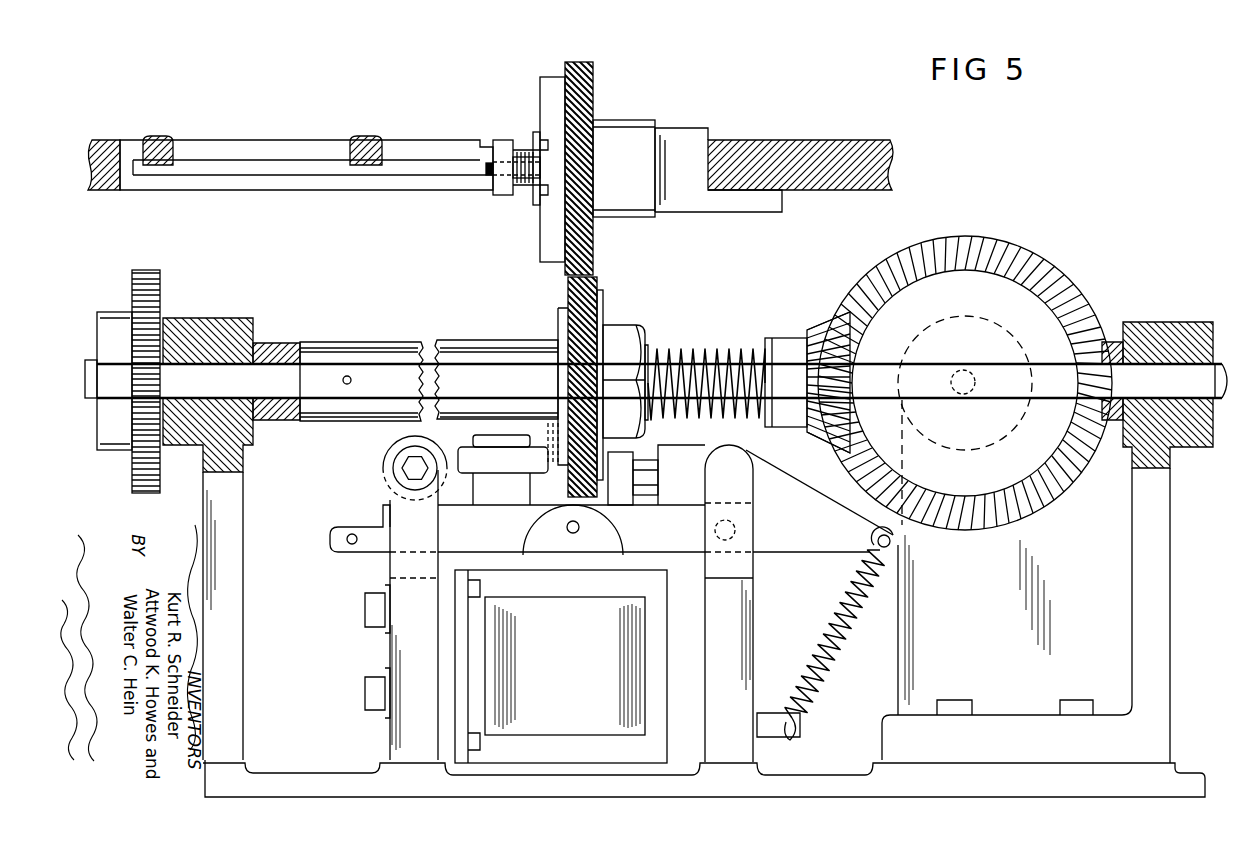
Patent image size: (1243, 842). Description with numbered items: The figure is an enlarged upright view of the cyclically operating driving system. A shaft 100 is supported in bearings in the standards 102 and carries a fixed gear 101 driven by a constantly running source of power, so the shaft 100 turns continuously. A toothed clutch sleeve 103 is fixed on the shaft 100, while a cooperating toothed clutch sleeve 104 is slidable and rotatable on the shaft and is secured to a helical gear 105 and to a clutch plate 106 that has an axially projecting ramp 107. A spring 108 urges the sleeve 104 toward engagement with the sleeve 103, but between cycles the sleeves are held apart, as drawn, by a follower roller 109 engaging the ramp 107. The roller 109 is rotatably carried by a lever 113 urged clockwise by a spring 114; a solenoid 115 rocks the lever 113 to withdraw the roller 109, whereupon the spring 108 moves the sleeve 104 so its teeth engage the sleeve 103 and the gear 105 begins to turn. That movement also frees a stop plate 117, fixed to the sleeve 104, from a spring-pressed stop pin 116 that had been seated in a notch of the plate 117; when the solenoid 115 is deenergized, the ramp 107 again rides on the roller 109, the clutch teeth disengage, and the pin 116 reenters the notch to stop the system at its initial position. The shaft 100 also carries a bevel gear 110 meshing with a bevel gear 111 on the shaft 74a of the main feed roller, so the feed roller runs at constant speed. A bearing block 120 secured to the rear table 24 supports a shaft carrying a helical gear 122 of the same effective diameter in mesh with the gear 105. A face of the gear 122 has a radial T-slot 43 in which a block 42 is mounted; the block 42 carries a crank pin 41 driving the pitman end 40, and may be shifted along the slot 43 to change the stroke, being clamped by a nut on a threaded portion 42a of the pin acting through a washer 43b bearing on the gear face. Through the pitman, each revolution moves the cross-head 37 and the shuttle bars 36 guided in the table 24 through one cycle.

The table 24 is at (96, 140).
The shuttle bars 36 is at (158, 138).
The cross-head 37 is at (270, 172).
The pitman end 40 is at (498, 194).
The crank pin 41 is at (488, 172).
The block 42 is at (541, 184).
The threaded portion 42a is at (525, 150).
The radial slot 43 is at (555, 148).
The washer 43b is at (536, 170).
The shaft 74a is at (965, 370).
The shaft 100 is at (948, 432).
The gear 101 is at (160, 286).
The standards 102 is at (235, 503).
The toothed clutch sleeve 103 is at (305, 345).
The toothed clutch sleeve 104 is at (500, 345).
The helical gear 105 is at (598, 278).
The clutch plate 106 is at (558, 310).
The ramp 107 is at (556, 452).
The spring 108 is at (695, 350).
The follower roller 109 is at (503, 470).
The bevel gear 110 is at (816, 330).
The bevel gear 111 is at (990, 236).
The lever 113 is at (808, 553).
The spring 114 is at (830, 670).
The solenoid 115 is at (561, 666).
The stop pin 116 is at (648, 475).
The stop plate 117 is at (604, 298).
The bearing block 120 is at (700, 213).
The helical gear 122 is at (597, 80).